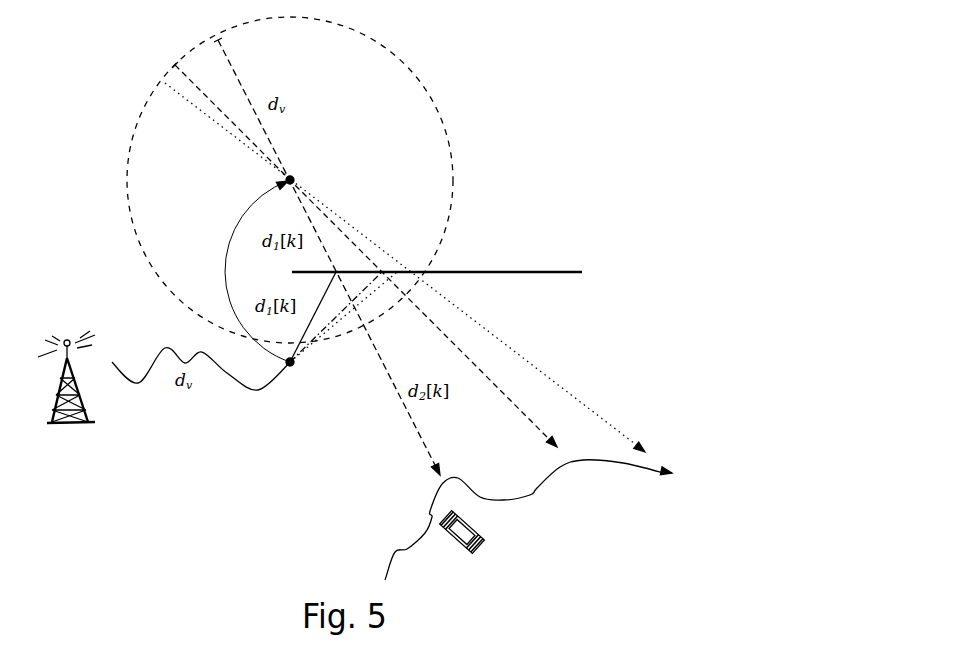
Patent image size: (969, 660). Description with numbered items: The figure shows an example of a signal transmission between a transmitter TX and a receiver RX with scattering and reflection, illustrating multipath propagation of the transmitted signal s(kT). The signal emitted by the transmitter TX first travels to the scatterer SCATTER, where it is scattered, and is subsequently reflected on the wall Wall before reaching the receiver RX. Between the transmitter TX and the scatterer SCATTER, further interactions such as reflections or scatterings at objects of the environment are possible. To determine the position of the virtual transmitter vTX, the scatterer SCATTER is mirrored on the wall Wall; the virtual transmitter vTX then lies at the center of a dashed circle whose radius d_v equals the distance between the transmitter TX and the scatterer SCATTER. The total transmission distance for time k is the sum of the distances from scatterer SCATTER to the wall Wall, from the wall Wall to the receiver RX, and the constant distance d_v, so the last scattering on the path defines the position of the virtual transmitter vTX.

The transmitter TX is at (66, 400).
The virtual transmitter vTX is at (321, 171).
The receiver RX is at (528, 520).
The scatterer SCATTER is at (341, 344).
The wall Wall is at (440, 287).